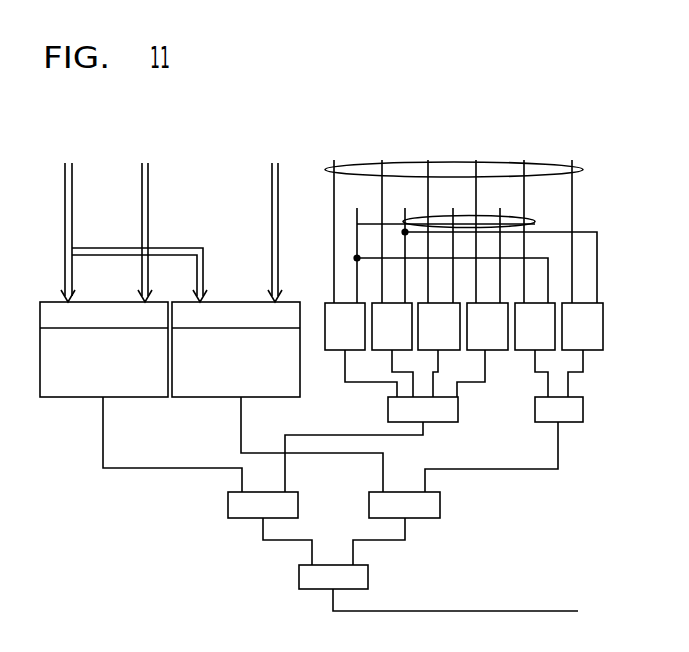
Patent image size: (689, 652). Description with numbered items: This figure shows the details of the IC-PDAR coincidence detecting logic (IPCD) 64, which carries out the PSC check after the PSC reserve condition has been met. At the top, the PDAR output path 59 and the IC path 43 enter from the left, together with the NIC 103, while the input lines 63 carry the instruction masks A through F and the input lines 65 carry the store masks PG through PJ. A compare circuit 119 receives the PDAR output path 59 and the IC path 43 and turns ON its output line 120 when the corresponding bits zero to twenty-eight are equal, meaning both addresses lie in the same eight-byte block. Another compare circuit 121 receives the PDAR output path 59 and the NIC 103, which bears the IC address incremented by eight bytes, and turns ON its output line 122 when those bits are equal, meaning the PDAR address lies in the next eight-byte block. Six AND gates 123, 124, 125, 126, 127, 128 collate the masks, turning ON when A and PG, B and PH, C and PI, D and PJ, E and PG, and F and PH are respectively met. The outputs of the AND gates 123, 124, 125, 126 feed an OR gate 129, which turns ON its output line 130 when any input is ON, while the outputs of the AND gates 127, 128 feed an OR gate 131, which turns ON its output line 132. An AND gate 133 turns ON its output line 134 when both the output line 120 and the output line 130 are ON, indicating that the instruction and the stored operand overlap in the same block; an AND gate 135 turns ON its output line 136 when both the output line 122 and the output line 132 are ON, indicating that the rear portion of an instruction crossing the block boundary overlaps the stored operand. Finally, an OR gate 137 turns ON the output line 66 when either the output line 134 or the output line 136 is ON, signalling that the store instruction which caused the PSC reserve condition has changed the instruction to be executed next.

The IC-PDAR coincidence detecting logic 64 is at (376, 118).
The PDAR output path 59 is at (73, 180).
The IC path 43 is at (149, 180).
The NIC 103 is at (272, 191).
The input lines for instruction masks 63 is at (583, 170).
The input lines for store masks 65 is at (469, 242).
The compare circuit 119 is at (102, 300).
The compare circuit 121 is at (236, 300).
The output line 120 is at (103, 410).
The output line 122 is at (241, 410).
The AND gate 123 is at (333, 351).
The AND gate 124 is at (379, 351).
The AND gate 125 is at (452, 351).
The AND gate 126 is at (500, 351).
The AND gate 127 is at (538, 351).
The AND gate 128 is at (593, 351).
The OR gate 129 is at (458, 407).
The output line 130 is at (423, 435).
The OR gate 131 is at (583, 407).
The output line 132 is at (558, 440).
The AND gate 133 is at (228, 506).
The output line 134 is at (263, 539).
The AND gate 135 is at (440, 506).
The output line 136 is at (405, 539).
The OR gate 137 is at (368, 577).
The output line 66 is at (533, 611).